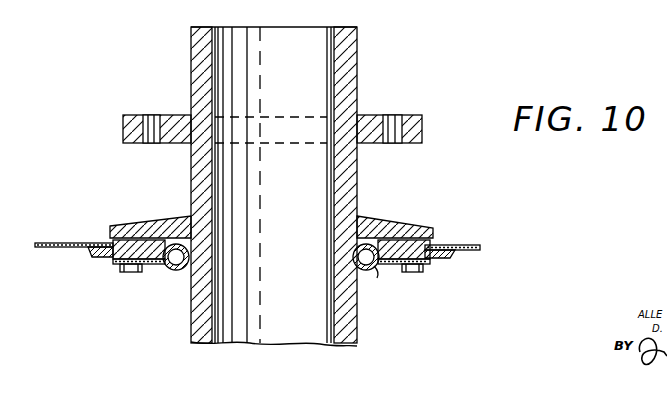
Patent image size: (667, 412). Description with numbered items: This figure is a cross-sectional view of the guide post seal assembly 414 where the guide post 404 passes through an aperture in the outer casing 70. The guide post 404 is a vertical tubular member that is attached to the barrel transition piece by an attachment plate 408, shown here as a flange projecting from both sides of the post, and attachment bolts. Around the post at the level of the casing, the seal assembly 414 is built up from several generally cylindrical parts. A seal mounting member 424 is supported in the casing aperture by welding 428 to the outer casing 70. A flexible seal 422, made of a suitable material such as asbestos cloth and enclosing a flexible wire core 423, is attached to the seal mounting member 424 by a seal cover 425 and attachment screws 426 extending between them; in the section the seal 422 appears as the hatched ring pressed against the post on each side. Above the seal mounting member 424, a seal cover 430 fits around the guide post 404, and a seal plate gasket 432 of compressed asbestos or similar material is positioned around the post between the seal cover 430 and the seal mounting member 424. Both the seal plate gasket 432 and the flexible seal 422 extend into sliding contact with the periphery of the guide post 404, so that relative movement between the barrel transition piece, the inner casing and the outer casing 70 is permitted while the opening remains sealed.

The outer casing 70 is at (69, 242).
The guide post 404 is at (358, 160).
The attachment plate 408 is at (423, 124).
The guide post seal assembly 414 is at (133, 195).
The flexible seal 422 is at (364, 272).
The flexible wire core 423 is at (375, 278).
The seal mounting member 424 is at (430, 248).
The seal cover 425 is at (393, 265).
The attachment screws 426 is at (421, 268).
The welding 428 is at (112, 258).
The seal cover 430 is at (396, 222).
The seal plate gasket 432 is at (148, 224).